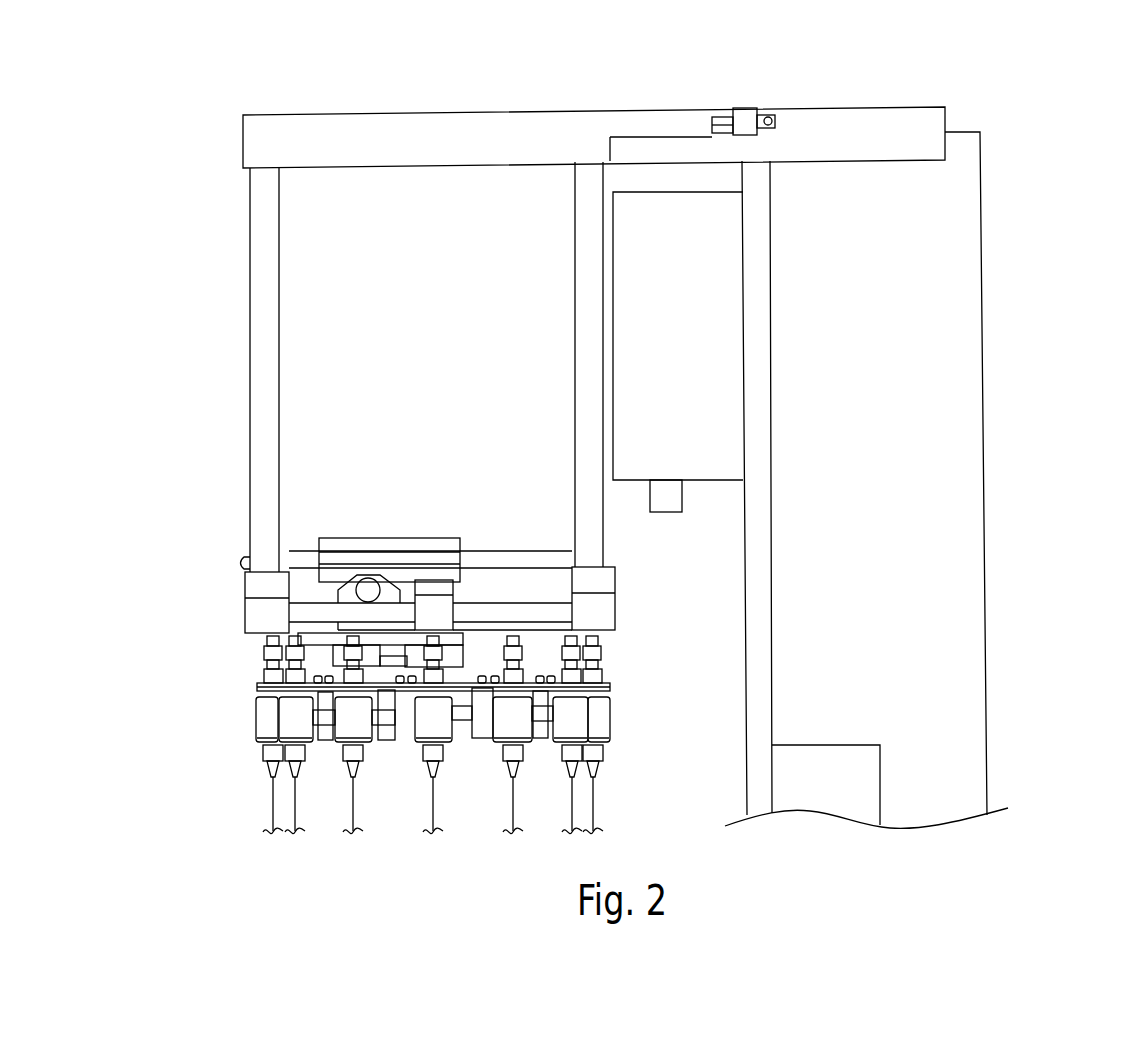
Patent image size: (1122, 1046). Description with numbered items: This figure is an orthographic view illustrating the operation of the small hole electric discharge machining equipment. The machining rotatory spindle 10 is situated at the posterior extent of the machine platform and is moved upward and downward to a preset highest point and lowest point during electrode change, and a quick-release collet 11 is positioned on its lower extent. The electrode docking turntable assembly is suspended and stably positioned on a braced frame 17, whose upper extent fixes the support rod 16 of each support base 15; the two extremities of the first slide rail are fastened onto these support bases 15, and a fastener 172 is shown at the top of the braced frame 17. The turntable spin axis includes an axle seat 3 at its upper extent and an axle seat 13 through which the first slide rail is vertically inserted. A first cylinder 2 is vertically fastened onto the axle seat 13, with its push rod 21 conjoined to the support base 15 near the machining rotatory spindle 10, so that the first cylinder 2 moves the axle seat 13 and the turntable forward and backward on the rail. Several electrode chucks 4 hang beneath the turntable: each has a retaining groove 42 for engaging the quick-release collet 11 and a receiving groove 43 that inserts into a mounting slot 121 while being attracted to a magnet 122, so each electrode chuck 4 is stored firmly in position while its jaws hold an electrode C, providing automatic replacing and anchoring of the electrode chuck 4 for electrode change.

The braced frame 17 is at (547, 115).
The beam fastener 172 is at (747, 122).
The machining rotatory spindle 10 is at (697, 348).
The quick-release collet 11 is at (673, 502).
The support rod 16 is at (250, 273).
The support base 15 is at (252, 597).
The push rod 21 is at (538, 550).
The first cylinder 2 is at (386, 542).
The axle seat 3 is at (370, 590).
The axle seat 13 is at (416, 640).
The retaining groove 42 is at (598, 657).
The mounting slot 121 is at (488, 695).
The receiving groove 43 is at (433, 683).
The electrode chuck 4 is at (265, 728).
The magnet 122 is at (383, 742).
The electrode C is at (273, 810).